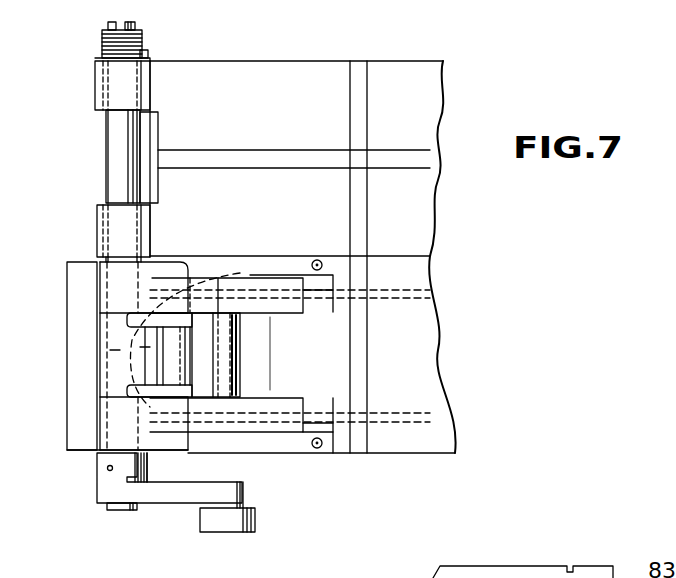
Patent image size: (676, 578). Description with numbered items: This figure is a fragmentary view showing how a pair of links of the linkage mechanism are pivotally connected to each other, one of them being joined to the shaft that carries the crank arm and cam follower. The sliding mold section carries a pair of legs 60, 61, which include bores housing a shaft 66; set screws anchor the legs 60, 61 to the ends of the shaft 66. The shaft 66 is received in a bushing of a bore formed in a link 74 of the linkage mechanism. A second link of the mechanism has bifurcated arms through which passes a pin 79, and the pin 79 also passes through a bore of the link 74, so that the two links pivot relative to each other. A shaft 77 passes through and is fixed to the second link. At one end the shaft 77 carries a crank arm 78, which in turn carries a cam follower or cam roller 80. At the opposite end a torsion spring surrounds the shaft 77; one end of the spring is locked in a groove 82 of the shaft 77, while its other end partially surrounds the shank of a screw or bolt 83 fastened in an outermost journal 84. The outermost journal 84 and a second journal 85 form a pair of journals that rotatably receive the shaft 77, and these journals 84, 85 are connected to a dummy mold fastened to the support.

The leg 60 is at (287, 315).
The leg 61 is at (293, 403).
The shaft 66 is at (222, 294).
The link 74 is at (235, 350).
The shaft 77 is at (120, 155).
The crank arm 78 is at (177, 505).
The pin 79 is at (250, 347).
The cam follower 80 is at (250, 532).
The groove 82 is at (120, 28).
The screw 83 is at (144, 51).
The outermost journal 84 is at (95, 83).
The journal 85 is at (96, 231).